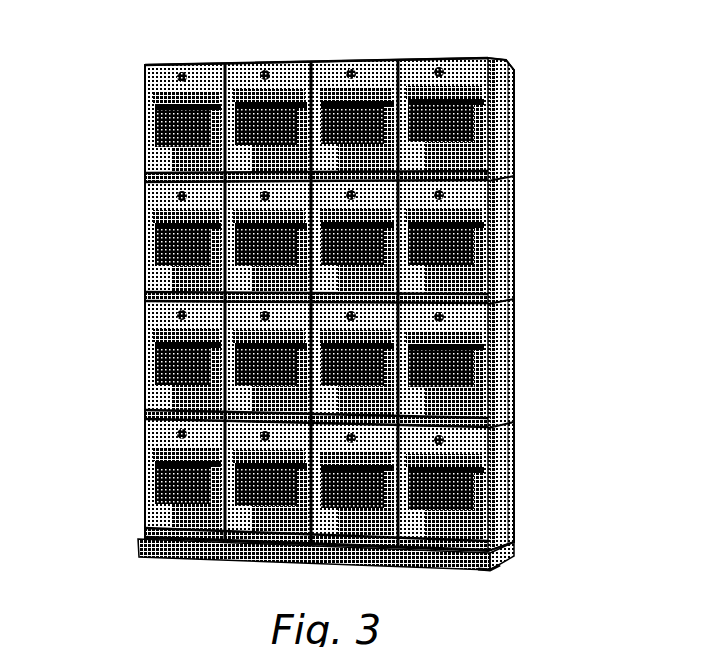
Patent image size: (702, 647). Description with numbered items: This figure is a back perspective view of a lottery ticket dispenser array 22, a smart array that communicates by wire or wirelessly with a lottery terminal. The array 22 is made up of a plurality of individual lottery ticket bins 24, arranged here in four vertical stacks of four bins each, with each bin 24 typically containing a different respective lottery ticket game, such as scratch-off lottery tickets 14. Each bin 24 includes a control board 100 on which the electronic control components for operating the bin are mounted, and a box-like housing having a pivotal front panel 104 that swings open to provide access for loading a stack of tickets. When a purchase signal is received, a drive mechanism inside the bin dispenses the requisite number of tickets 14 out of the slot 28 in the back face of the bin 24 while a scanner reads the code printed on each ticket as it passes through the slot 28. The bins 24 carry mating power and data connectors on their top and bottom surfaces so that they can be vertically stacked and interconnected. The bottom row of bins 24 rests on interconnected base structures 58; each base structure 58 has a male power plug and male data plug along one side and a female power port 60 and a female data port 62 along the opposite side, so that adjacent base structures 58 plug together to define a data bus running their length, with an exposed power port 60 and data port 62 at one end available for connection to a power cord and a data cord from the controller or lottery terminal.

The lottery ticket dispenser array 22 is at (592, 132).
The lottery ticket bin 24 is at (490, 84).
The lottery ticket 14 is at (150, 119).
The control board 100 is at (283, 85).
The front panel 104 is at (470, 266).
The slot 28 is at (148, 338).
The base structure 58 is at (163, 540).
The female power port 60 is at (494, 549).
The female data port 62 is at (481, 557).